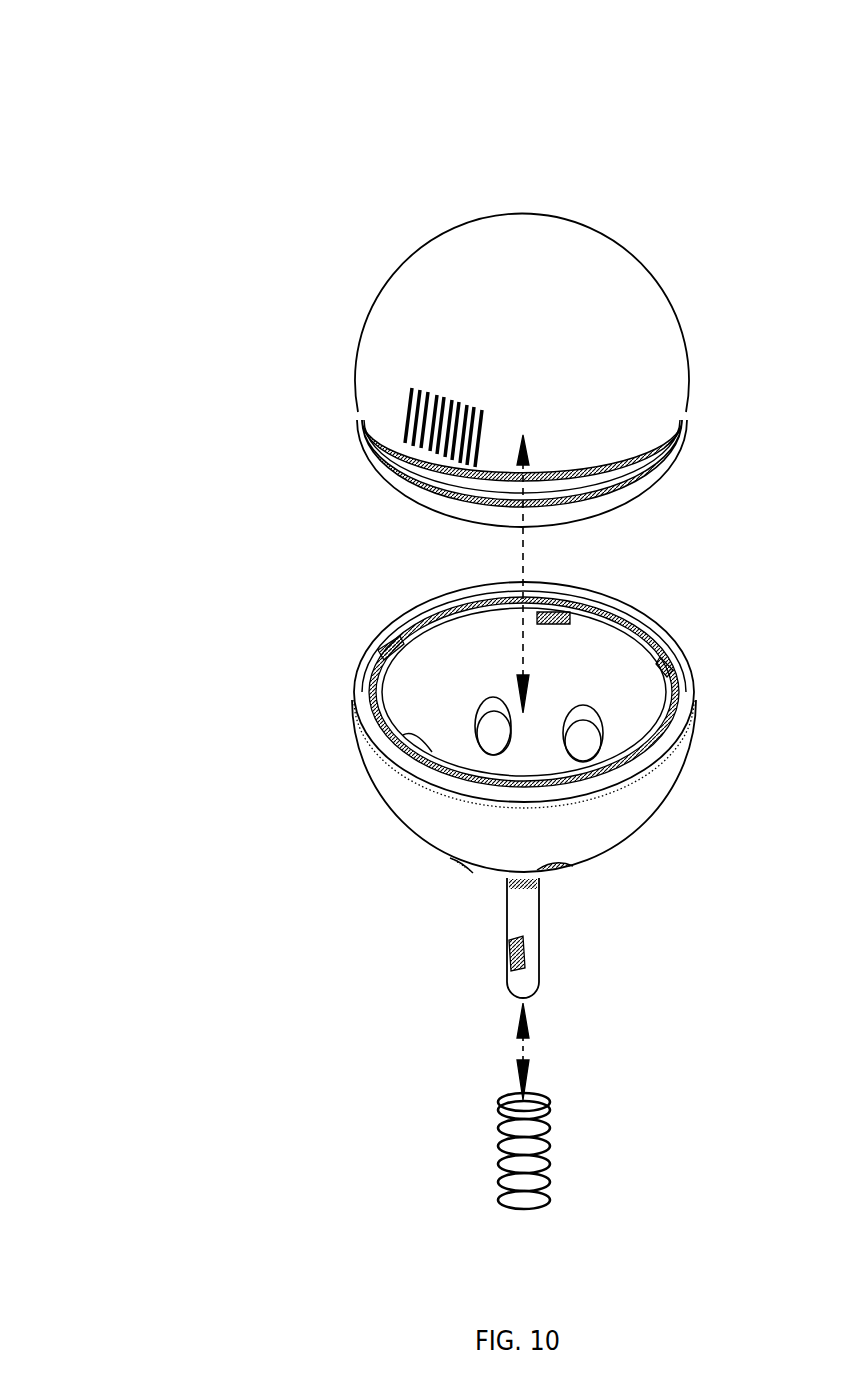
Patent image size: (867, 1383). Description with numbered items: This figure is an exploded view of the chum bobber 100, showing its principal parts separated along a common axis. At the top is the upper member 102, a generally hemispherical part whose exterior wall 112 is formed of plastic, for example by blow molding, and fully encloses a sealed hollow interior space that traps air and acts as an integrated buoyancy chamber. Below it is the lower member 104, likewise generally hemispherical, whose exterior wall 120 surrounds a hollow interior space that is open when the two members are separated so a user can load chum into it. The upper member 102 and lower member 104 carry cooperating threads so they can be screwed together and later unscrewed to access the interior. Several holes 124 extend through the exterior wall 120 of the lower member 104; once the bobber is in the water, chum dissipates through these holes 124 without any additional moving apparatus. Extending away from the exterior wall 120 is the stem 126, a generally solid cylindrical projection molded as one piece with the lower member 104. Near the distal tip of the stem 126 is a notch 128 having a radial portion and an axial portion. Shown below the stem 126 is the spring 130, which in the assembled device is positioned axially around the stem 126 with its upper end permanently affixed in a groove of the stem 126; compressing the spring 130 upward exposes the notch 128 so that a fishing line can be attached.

The chum bobber 100 is at (163, 67).
The upper member 102 is at (300, 247).
The lower member 104 is at (265, 829).
The exterior wall 112 is at (581, 245).
The exterior wall 120 is at (627, 817).
The holes 124 is at (457, 861).
The stem 126 is at (540, 985).
The notch 128 is at (508, 948).
The spring 130 is at (550, 1143).